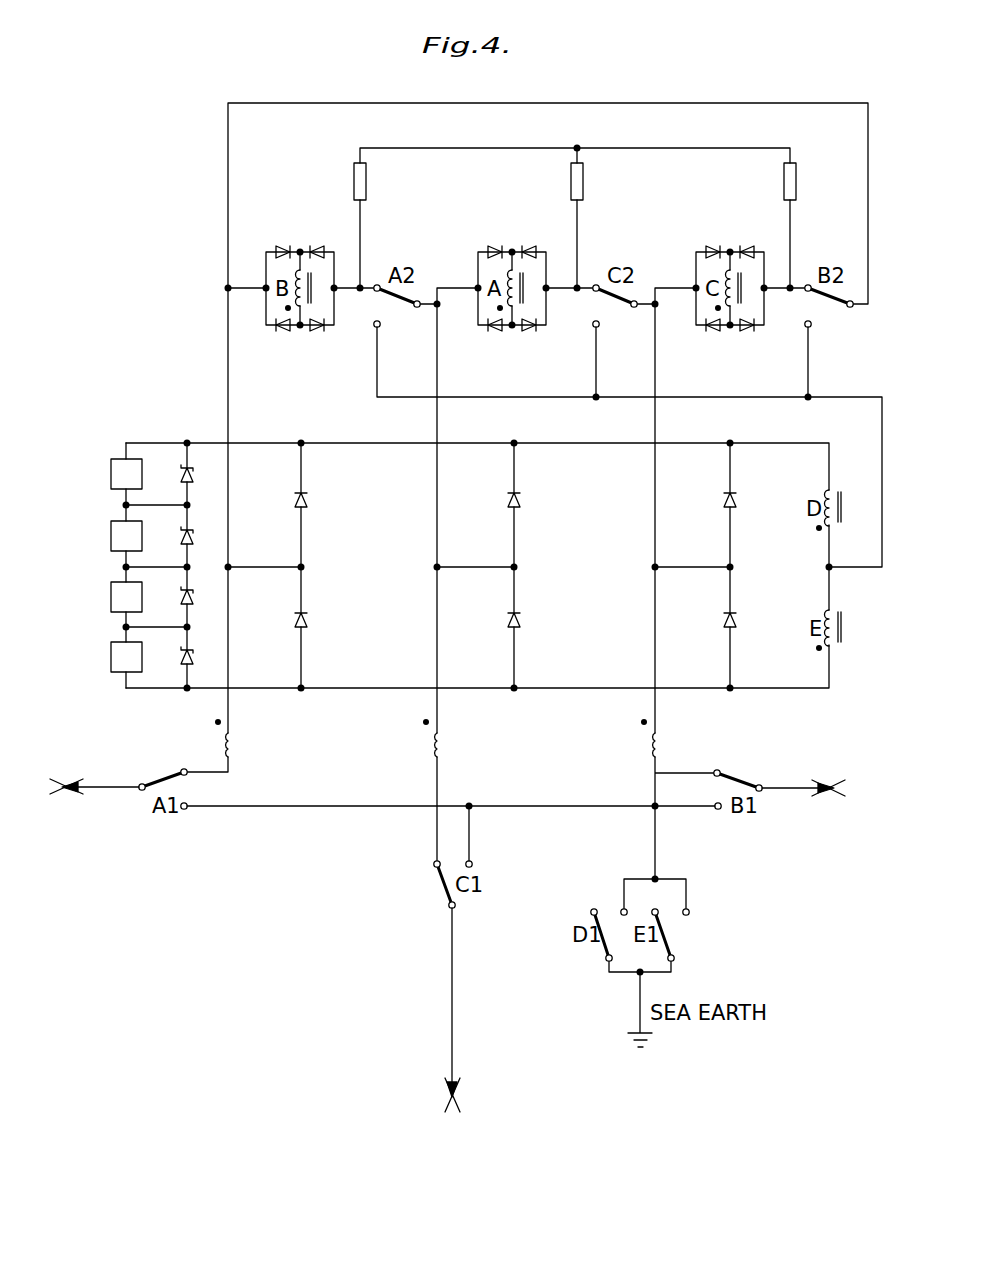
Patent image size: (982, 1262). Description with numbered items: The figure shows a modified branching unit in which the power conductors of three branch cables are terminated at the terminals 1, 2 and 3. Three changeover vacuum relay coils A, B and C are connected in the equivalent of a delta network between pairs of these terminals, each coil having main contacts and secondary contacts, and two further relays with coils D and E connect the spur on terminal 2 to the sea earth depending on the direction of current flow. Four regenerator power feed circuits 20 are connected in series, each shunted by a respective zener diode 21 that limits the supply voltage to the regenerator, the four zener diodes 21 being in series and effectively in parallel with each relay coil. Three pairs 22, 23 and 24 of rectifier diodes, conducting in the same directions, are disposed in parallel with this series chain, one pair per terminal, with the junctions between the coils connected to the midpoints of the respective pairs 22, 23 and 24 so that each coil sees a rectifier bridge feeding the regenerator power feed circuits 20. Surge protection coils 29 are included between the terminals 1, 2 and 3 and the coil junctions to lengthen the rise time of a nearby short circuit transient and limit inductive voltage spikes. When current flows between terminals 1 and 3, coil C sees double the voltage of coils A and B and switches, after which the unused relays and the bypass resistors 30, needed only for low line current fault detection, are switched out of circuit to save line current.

The terminal 1 is at (68, 780).
The terminal 2 is at (446, 1093).
The terminal 3 is at (829, 780).
The regenerator power feed circuit 20 is at (113, 474).
The zener diode 21 is at (193, 474).
The pair of rectifier diodes 22 is at (313, 569).
The pair of rectifier diodes 23 is at (526, 569).
The pair of rectifier diodes 24 is at (741, 569).
The surge protection coil 29 is at (223, 741).
The bypass resistor 30 is at (353, 181).